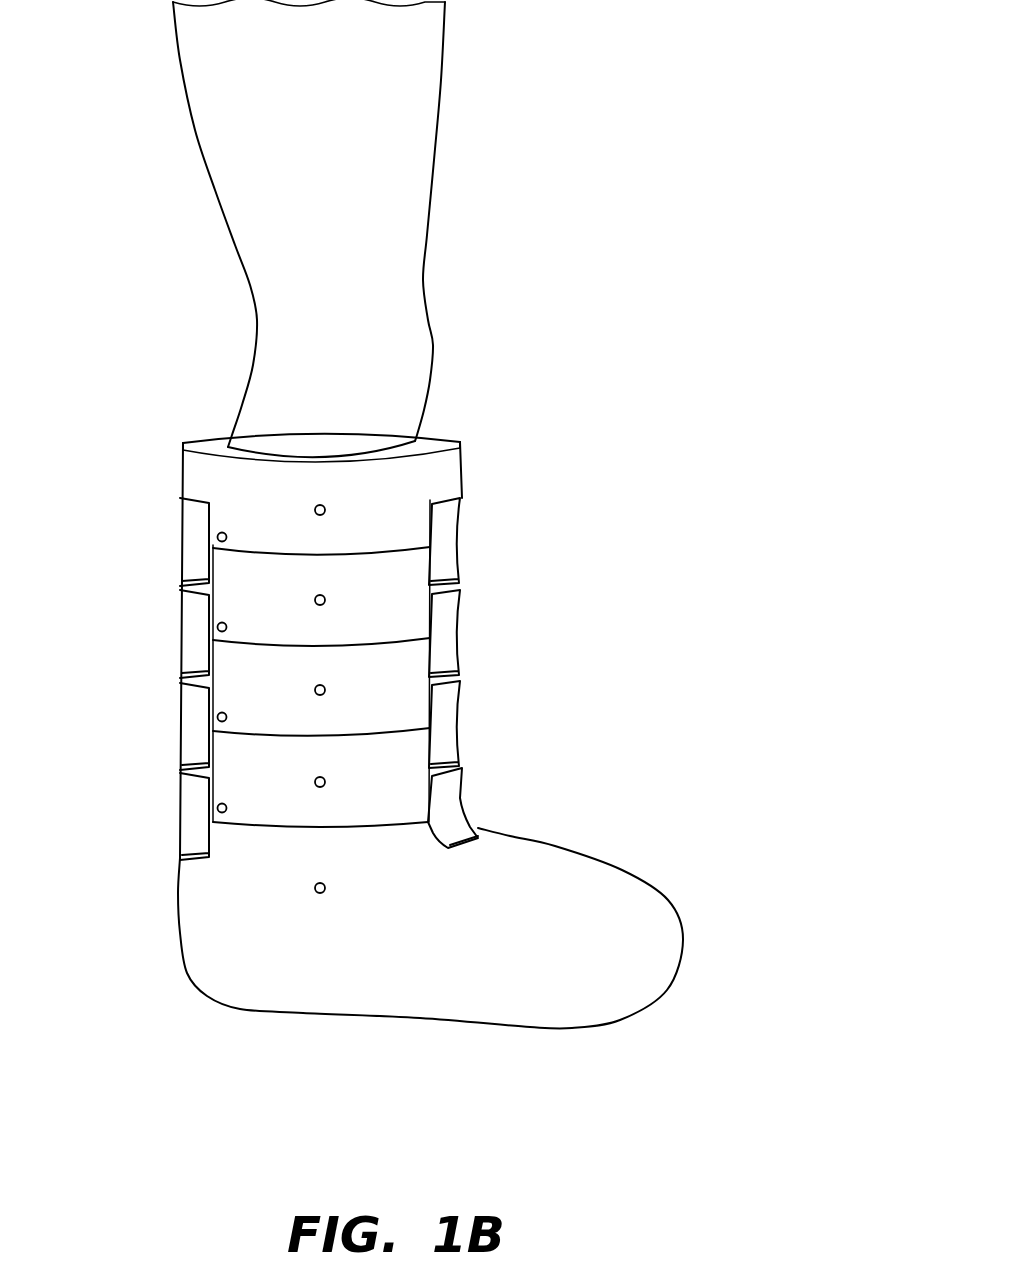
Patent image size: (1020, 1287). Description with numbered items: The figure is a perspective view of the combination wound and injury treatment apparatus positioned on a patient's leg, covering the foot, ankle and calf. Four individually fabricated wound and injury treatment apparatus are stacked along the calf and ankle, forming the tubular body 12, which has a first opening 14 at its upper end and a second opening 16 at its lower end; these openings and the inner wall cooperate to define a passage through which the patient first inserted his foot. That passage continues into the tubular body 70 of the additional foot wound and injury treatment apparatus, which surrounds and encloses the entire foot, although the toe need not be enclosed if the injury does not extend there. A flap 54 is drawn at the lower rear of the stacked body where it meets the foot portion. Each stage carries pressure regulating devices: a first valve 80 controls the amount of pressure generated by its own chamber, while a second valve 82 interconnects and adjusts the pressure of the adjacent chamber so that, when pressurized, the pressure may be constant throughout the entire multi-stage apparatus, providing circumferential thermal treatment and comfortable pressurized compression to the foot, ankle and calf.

The tubular body 12 is at (162, 666).
The first opening 14 is at (329, 434).
The second opening 16 is at (398, 847).
The heel flap 54 is at (403, 788).
The tubular body 70 is at (687, 882).
The first valve 80 is at (326, 509).
The second valve 82 is at (218, 537).